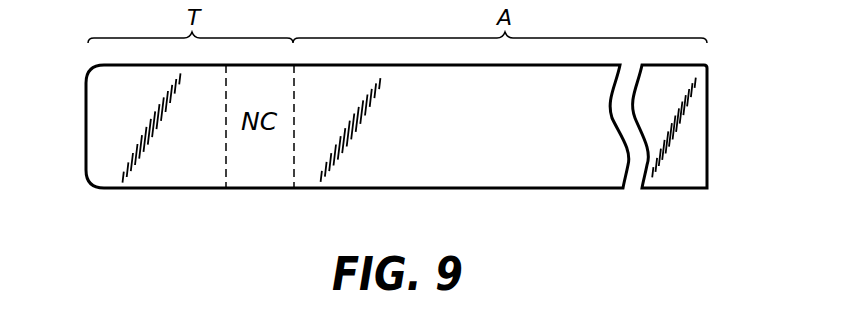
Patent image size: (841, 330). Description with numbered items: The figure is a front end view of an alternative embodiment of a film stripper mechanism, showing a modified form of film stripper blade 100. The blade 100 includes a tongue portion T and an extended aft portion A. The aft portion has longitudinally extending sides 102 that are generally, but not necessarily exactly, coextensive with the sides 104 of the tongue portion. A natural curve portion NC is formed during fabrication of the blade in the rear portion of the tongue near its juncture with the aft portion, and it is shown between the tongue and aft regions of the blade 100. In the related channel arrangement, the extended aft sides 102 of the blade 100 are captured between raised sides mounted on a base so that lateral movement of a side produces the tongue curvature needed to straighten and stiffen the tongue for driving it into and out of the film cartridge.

The film stripper blade 100 is at (499, 190).
The longitudinally extending sides 102 is at (402, 190).
The sides of the tongue portion 104 is at (157, 65).